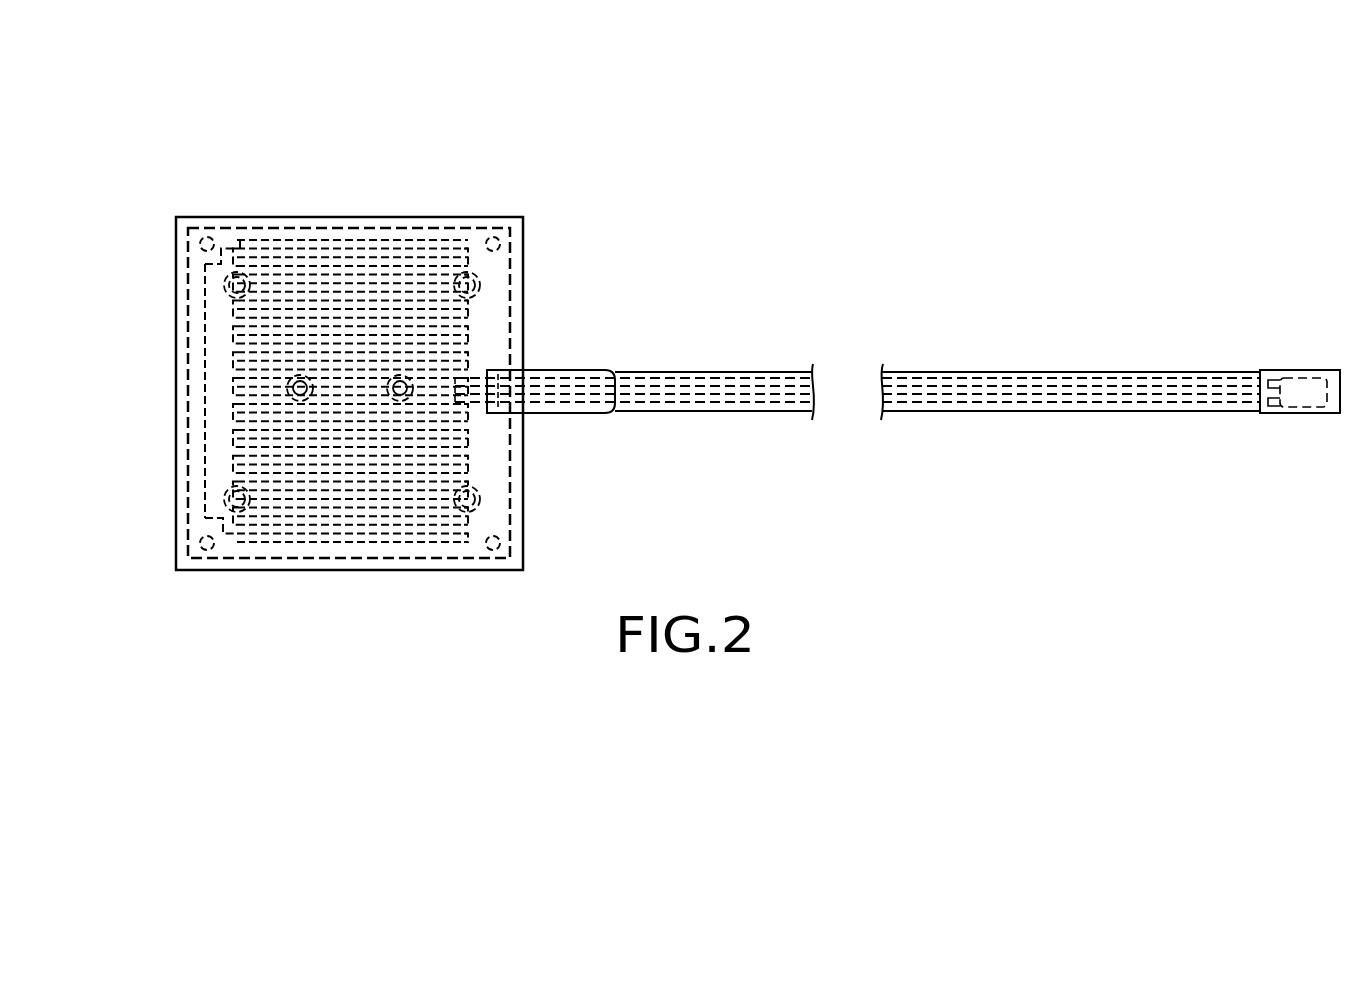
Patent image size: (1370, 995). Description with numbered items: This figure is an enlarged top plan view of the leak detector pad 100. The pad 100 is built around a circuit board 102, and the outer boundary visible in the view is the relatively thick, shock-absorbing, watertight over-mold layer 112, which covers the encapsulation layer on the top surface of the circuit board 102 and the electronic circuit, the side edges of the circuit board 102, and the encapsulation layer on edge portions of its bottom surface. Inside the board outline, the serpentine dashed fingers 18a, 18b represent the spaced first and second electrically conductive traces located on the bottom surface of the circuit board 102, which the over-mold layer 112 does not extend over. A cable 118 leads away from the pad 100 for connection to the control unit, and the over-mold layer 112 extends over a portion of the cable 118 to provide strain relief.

The leak detector pad 100 is at (945, 148).
The over-mold layer 112 is at (283, 217).
The circuit board 102 is at (430, 228).
The first heating trace 18a is at (218, 444).
The second heating trace 18b is at (483, 466).
The cable 118 is at (1172, 372).